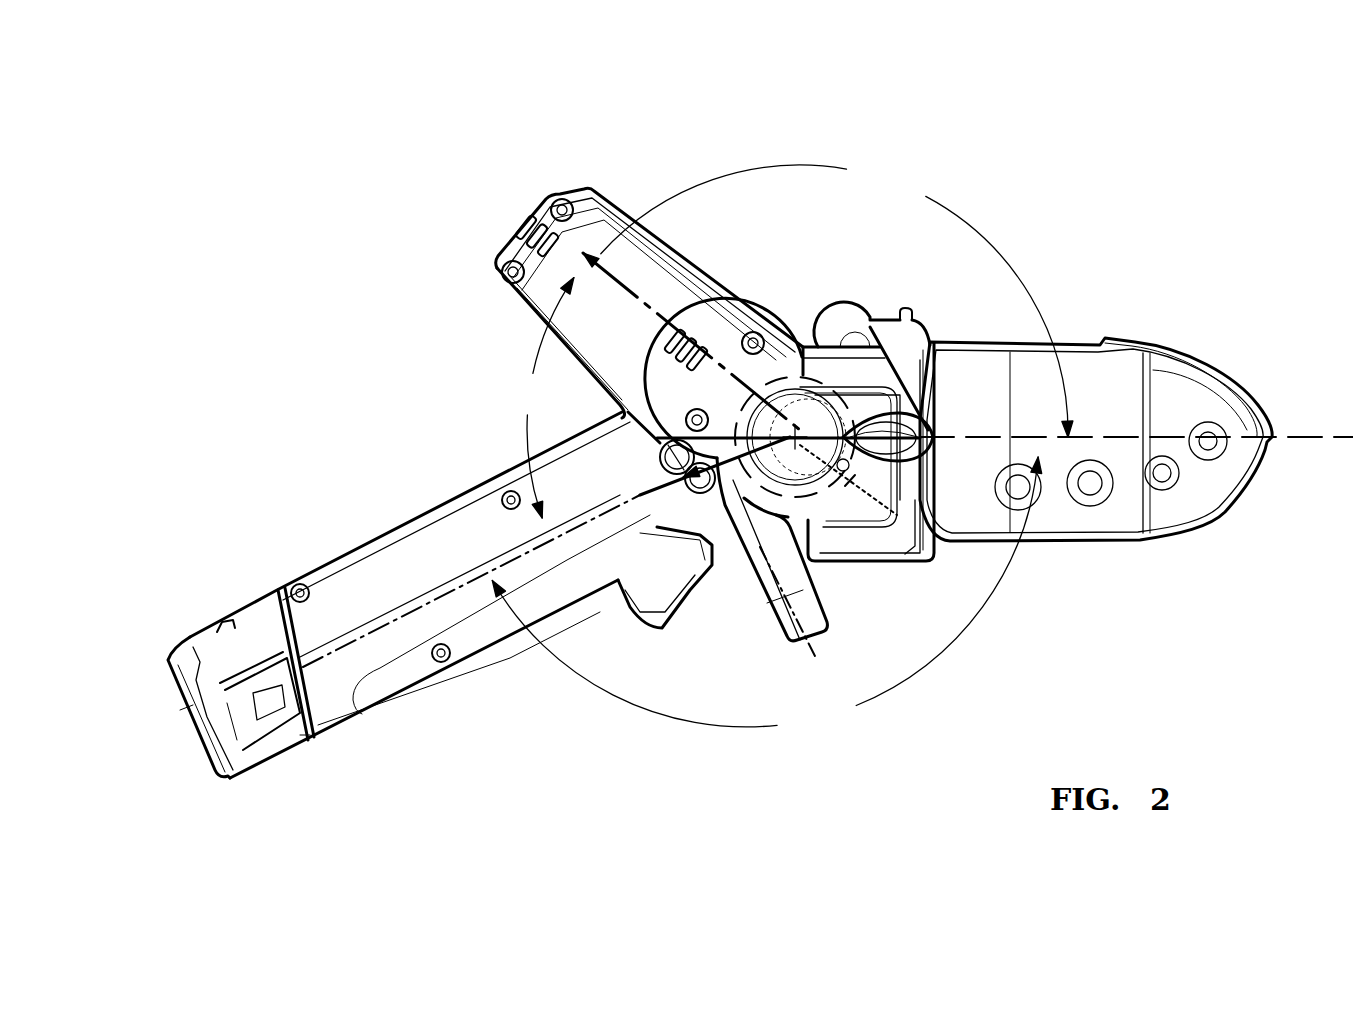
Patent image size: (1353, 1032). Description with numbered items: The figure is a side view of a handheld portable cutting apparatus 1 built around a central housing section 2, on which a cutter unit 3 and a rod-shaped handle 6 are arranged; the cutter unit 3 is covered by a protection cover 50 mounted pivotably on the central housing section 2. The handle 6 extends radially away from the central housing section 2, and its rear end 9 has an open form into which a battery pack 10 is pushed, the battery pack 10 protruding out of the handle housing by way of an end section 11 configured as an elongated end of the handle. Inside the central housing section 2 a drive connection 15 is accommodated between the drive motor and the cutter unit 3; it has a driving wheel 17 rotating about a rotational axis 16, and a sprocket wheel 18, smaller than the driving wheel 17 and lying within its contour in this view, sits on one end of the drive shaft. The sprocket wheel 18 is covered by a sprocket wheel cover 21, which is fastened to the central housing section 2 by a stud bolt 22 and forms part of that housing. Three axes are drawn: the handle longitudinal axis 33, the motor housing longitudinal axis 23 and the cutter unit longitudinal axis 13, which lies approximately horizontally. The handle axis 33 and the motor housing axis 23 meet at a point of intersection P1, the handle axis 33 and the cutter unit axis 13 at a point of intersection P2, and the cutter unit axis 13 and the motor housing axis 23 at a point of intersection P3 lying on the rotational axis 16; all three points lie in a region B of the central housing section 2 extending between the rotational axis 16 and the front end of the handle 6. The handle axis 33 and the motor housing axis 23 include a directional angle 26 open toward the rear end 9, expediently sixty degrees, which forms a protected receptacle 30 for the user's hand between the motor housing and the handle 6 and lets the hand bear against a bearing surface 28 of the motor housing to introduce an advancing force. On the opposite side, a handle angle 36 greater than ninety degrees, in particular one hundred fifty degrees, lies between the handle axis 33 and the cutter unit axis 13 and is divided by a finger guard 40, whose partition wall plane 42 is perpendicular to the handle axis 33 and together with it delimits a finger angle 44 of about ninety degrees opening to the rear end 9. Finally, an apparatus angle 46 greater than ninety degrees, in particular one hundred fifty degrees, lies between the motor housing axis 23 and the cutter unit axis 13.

The cutting apparatus 1 is at (324, 293).
The central housing section 2 is at (900, 560).
The cutter unit 3 is at (1189, 345).
The handle 6 is at (403, 640).
The rear end 9 is at (317, 722).
The battery pack 10 is at (245, 620).
The end section 11 is at (165, 662).
The cutter unit longitudinal axis 13 is at (1193, 447).
The drive connection 15 is at (842, 367).
The rotational axis 16 is at (830, 395).
The driving wheel 17 is at (808, 393).
The sprocket wheel 18 is at (820, 385).
The sprocket wheel cover 21 is at (910, 533).
The stud bolt 22 is at (900, 430).
The motor housing longitudinal axis 23 is at (658, 335).
The directional angle 26 is at (543, 398).
The bearing surface 28 is at (530, 337).
The protected receptacle 30 is at (600, 426).
The handle longitudinal axis 33 is at (452, 592).
The handle angle 36 is at (766, 595).
The finger guard 40 is at (813, 620).
The partition wall plane 42 is at (797, 603).
The finger angle 44 is at (784, 637).
The apparatus angle 46 is at (837, 301).
The protection cover 50 is at (1087, 392).
The point of intersection P1 is at (781, 430).
The point of intersection P2 is at (745, 445).
The point of intersection P3 is at (800, 450).
The region B is at (717, 440).